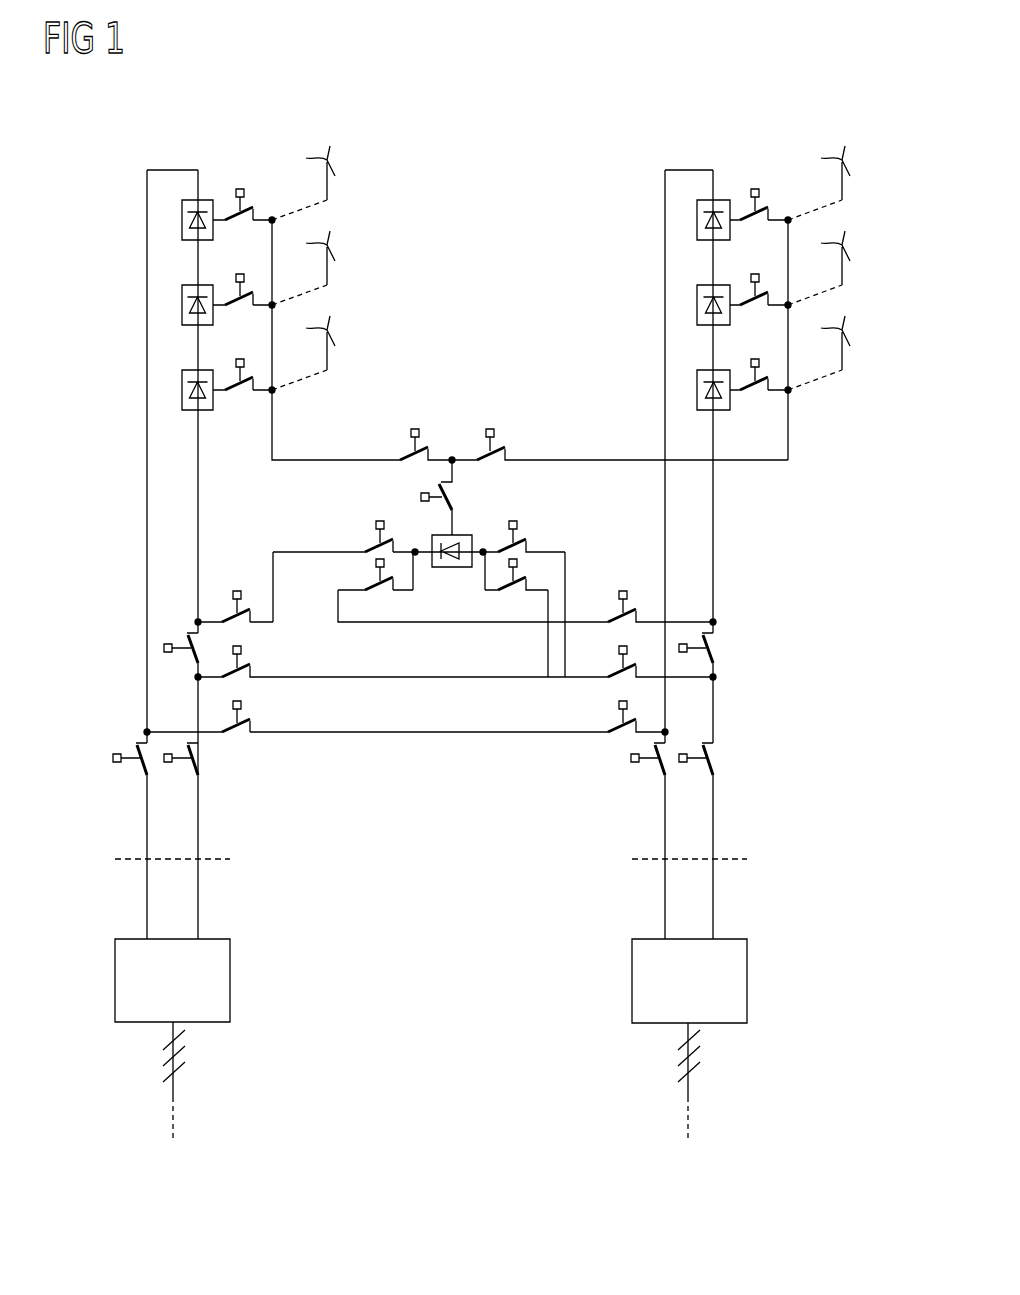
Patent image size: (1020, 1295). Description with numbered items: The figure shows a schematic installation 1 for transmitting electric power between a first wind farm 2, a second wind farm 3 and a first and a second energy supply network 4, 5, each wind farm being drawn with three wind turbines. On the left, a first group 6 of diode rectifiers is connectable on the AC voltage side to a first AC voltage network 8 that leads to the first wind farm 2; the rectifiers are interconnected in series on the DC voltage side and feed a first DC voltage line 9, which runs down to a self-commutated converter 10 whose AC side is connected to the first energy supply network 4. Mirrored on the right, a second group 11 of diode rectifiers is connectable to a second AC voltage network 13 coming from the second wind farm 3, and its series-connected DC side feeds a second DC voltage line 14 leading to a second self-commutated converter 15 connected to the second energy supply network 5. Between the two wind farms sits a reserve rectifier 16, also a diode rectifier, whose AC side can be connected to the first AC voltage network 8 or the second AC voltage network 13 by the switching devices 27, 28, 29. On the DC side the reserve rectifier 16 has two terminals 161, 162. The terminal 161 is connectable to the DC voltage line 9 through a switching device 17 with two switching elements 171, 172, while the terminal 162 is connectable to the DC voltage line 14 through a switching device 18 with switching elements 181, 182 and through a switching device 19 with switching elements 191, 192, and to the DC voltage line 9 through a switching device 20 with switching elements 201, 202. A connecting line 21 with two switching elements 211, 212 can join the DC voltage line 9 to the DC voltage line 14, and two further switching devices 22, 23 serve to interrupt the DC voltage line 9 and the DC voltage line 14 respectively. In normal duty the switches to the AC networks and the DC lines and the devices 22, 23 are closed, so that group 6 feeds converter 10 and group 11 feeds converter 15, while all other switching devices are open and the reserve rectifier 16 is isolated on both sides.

The installation 1 is at (113, 178).
The first wind farm 2 is at (340, 218).
The second wind farm 3 is at (846, 218).
The first energy supply network 4 is at (173, 1095).
The second energy supply network 5 is at (688, 1090).
The first group of diode rectifiers 6 is at (213, 178).
The first AC voltage network 8 is at (272, 412).
The first DC voltage line 9 is at (147, 513).
The self-commutated converter 10 is at (115, 985).
The second group of diode rectifiers 11 is at (718, 178).
The second AC voltage network 13 is at (788, 412).
The second DC voltage line 14 is at (713, 535).
The second self-commutated converter 15 is at (747, 973).
The reserve rectifier 16 is at (452, 570).
The switching device 17 is at (268, 551).
The switching device 18 is at (373, 637).
The switching device 19 is at (587, 548).
The switching device 20 is at (507, 690).
The connecting line 21 is at (285, 735).
The switching device 22 is at (164, 648).
The switching device 23 is at (708, 648).
The switching device 27 is at (415, 428).
The switching device 28 is at (490, 428).
The switching device 29 is at (420, 497).
The terminal 161 is at (415, 556).
The terminal 162 is at (483, 556).
The switching element 171 is at (237, 590).
The switching element 172 is at (374, 524).
The switching element 181 is at (374, 563).
The switching element 182 is at (623, 590).
The switching element 191 is at (517, 524).
The switching element 192 is at (619, 648).
The switching element 201 is at (517, 563).
The switching element 202 is at (242, 648).
The switching element 211 is at (242, 703).
The switching element 212 is at (619, 703).